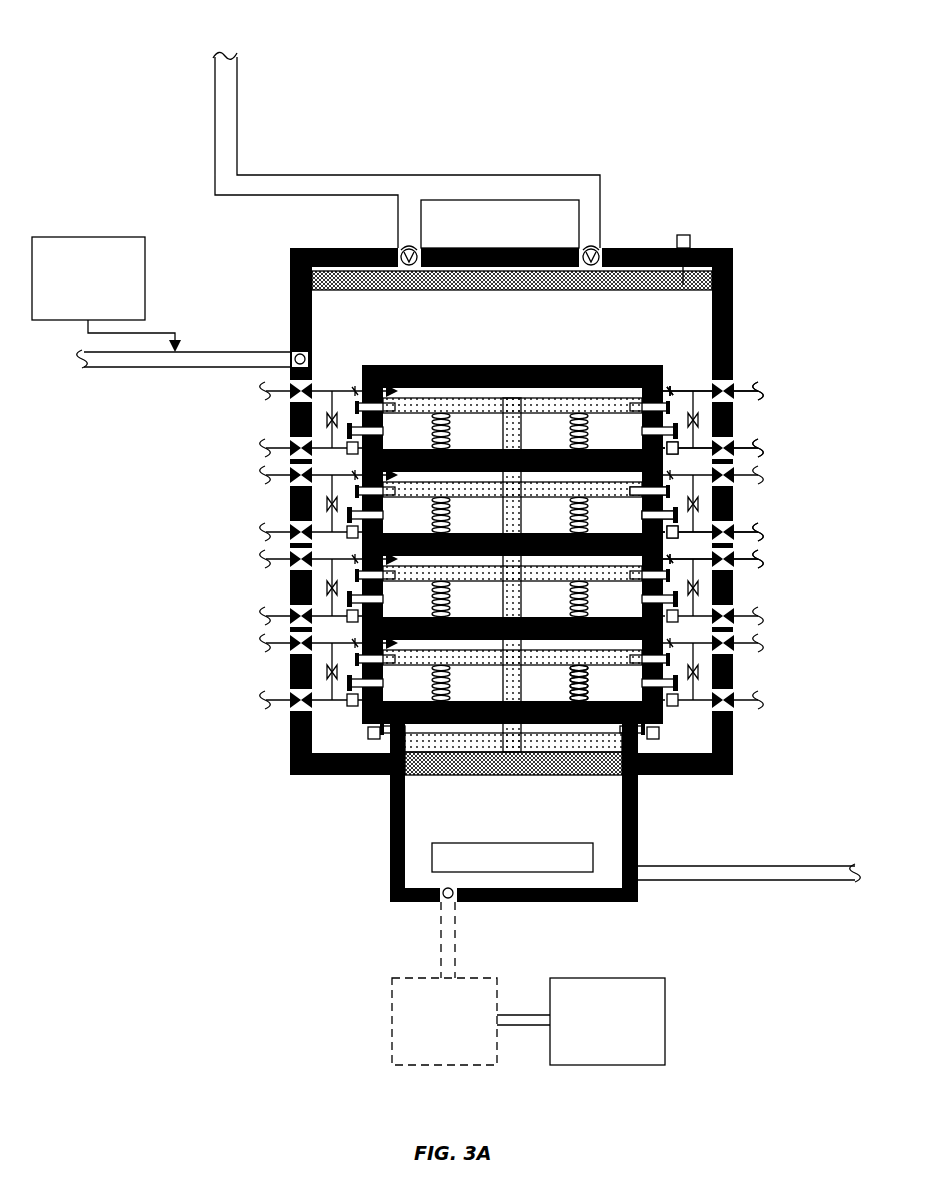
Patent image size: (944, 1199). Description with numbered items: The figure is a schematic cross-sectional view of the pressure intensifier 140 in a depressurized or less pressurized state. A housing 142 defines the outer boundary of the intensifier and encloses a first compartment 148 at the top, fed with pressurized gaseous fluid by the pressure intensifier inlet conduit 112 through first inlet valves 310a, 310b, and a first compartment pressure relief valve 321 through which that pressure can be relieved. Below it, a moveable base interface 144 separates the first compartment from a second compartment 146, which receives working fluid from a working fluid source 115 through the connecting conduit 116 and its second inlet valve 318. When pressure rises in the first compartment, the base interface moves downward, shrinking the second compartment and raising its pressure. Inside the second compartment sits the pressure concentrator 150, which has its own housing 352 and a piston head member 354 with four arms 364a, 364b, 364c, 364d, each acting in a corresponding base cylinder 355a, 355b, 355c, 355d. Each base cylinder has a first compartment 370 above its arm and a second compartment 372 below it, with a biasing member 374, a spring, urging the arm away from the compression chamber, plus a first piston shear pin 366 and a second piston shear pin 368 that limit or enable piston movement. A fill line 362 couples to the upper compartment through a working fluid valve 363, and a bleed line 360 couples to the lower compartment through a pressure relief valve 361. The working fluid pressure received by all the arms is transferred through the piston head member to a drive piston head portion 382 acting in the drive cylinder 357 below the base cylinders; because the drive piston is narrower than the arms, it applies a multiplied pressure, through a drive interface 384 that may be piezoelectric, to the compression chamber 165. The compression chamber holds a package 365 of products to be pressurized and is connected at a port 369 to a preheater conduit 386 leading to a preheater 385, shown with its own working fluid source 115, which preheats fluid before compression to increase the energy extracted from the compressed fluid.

The pressure intensifier 140 is at (800, 97).
The pressure intensifier inlet conduit 112 is at (215, 125).
The first inlet valve 310a is at (402, 250).
The first inlet valve 310b is at (598, 248).
The first compartment pressure relief valve 321 is at (641, 278).
The base interface 144 is at (683, 235).
The housing 142 is at (705, 245).
The first compartment 148 is at (708, 268).
The second compartment 146 is at (677, 323).
The pressure concentrator 150 is at (672, 367).
The working fluid valve 363 is at (665, 391).
The fill line 362 is at (757, 386).
The pressure relief valve 361 is at (748, 398).
The bleed line 360 is at (757, 447).
The first piston shear pin 366 is at (668, 492).
The second piston shear pin 368 is at (678, 516).
The first compartment 370 is at (758, 534).
The second compartment 372 is at (758, 567).
The biasing member 374 is at (592, 690).
The drive cylinder 357 is at (588, 726).
The drive piston head portion 382 is at (450, 745).
The drive interface 384 is at (462, 765).
The port 369 is at (445, 888).
The preheater conduit 386 is at (440, 950).
The preheater 385 is at (444, 1021).
The compression chamber 165 is at (514, 812).
The package 365 is at (512, 857).
The WF source 115 is at (348, 651).
The connecting conduit 116 is at (140, 367).
The second inlet valve 318 is at (298, 356).
The housing 352 is at (385, 365).
The piston head member 354 is at (513, 405).
The arm 364a is at (443, 405).
The arm 364b is at (545, 490).
The arm 364c is at (413, 573).
The arm 364d is at (600, 657).
The base cylinder 355a is at (388, 391).
The base cylinder 355b is at (388, 475).
The base cylinder 355c is at (388, 559).
The base cylinder 355d is at (388, 643).